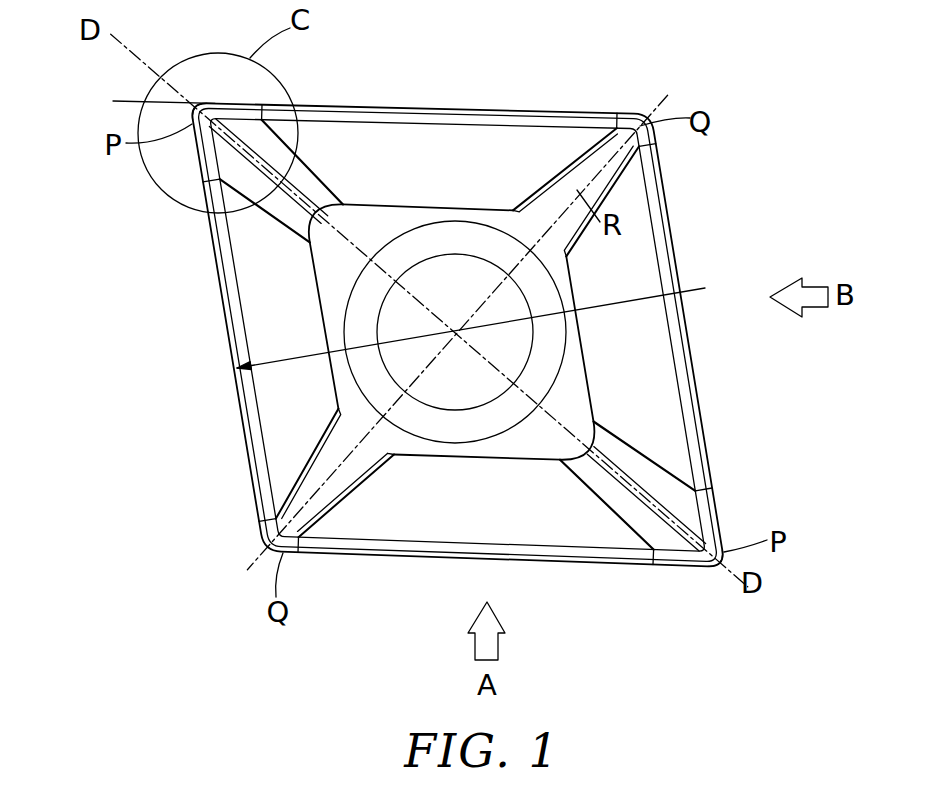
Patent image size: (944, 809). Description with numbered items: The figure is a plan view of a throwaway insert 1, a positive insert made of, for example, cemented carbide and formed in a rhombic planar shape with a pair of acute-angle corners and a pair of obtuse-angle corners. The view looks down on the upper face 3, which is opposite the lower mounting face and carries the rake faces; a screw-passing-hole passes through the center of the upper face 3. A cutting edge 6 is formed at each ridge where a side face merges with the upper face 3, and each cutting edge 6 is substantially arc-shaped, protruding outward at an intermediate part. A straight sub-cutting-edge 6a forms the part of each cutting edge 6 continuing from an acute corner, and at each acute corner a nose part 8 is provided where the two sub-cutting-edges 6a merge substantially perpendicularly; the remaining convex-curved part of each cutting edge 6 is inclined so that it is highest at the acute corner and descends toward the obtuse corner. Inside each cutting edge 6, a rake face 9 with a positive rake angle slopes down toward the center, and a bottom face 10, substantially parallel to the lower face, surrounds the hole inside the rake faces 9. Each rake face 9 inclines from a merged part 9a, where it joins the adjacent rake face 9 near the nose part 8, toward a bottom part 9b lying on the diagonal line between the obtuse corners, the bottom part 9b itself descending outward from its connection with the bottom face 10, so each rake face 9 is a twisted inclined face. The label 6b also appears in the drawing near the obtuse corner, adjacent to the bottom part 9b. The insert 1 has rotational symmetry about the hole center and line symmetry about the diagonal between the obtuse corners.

The throwaway insert 1 is at (557, 90).
The upper face 3 is at (627, 273).
The cutting edge 6 is at (418, 105).
The sub-cutting-edge 6a is at (250, 100).
The ridge portion at obtuse corner 6b is at (337, 490).
The nose part 8 is at (226, 92).
The rake face 9 is at (471, 137).
The merged part 9a is at (298, 188).
The bottom part 9b is at (580, 167).
The bottom face 10 is at (559, 406).